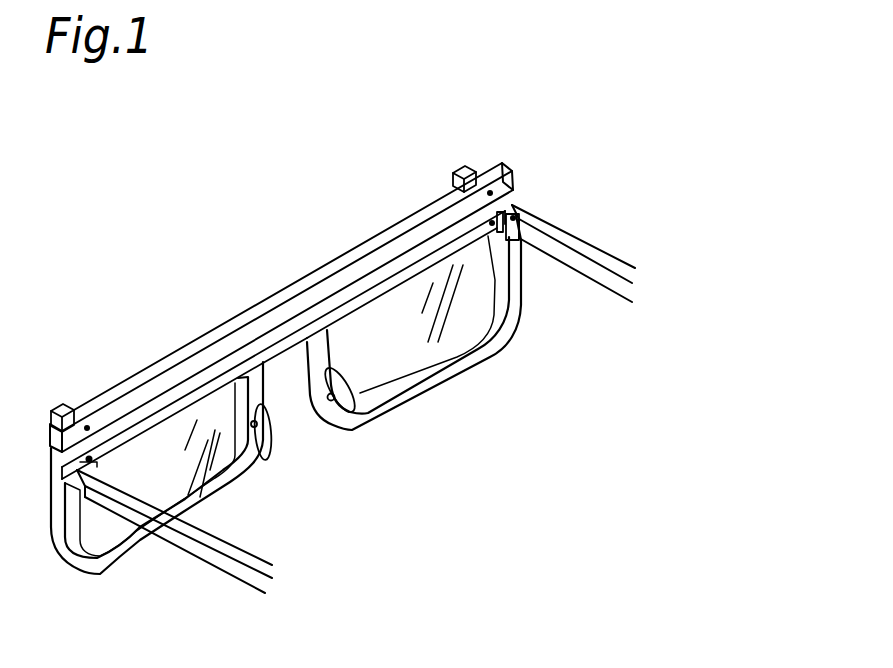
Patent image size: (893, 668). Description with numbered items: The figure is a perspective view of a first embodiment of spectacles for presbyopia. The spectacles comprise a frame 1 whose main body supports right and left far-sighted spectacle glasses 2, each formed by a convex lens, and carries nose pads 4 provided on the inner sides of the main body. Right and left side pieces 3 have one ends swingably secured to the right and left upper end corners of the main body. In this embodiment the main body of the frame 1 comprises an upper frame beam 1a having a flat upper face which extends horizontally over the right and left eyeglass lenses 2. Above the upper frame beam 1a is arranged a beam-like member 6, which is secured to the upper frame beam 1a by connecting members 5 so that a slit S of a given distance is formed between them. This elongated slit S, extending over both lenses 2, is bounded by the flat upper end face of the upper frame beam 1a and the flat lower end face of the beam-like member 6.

The frame 1 is at (264, 432).
The upper frame beam 1a is at (282, 350).
The far-sighted spectacle glass 2 is at (110, 528).
The side piece 3 is at (563, 255).
The nose pad 4 is at (261, 461).
The connecting member 5 is at (65, 401).
The beam-like member 6 is at (190, 343).
The slit S is at (125, 418).